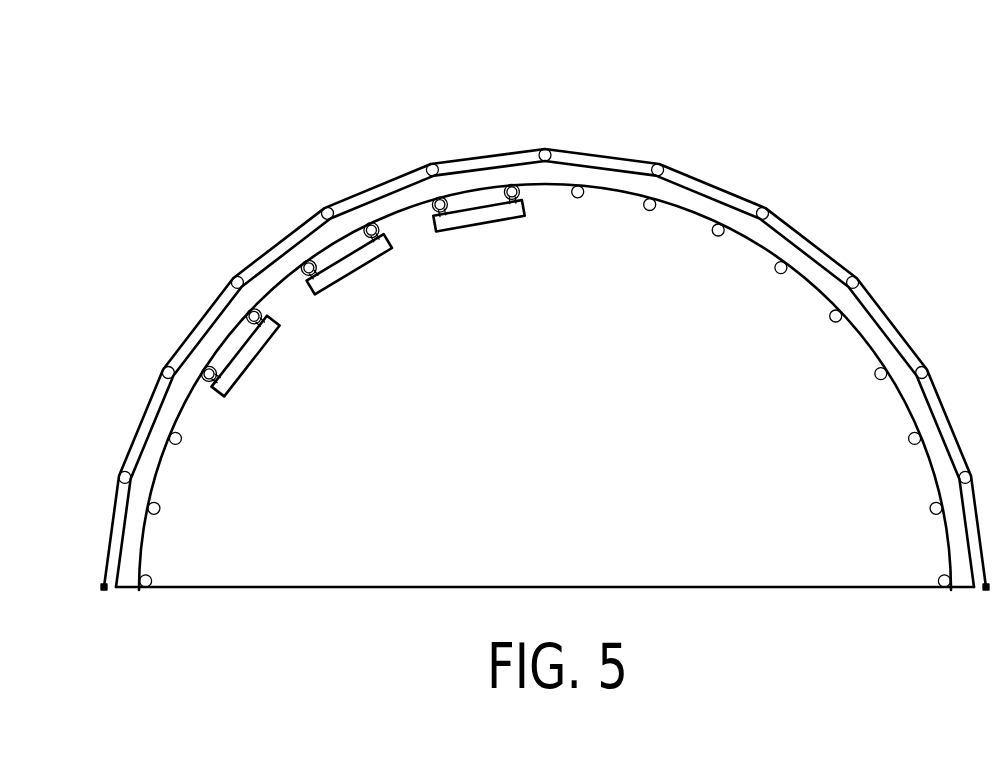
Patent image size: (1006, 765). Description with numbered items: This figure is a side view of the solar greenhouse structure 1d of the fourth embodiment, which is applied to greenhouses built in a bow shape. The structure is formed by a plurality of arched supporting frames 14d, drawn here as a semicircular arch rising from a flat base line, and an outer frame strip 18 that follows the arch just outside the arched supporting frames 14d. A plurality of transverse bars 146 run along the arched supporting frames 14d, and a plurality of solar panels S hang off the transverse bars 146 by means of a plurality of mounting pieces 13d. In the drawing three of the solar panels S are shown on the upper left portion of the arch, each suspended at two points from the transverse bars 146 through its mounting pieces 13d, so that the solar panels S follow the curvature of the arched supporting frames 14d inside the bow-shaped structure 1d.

The solar greenhouse structure 1d is at (916, 111).
The outer frame strip 18 is at (283, 243).
The arched supporting frames 14d is at (387, 203).
The mounting pieces 13d is at (437, 197).
The transverse bars 146 is at (250, 313).
The solar panels S is at (473, 220).